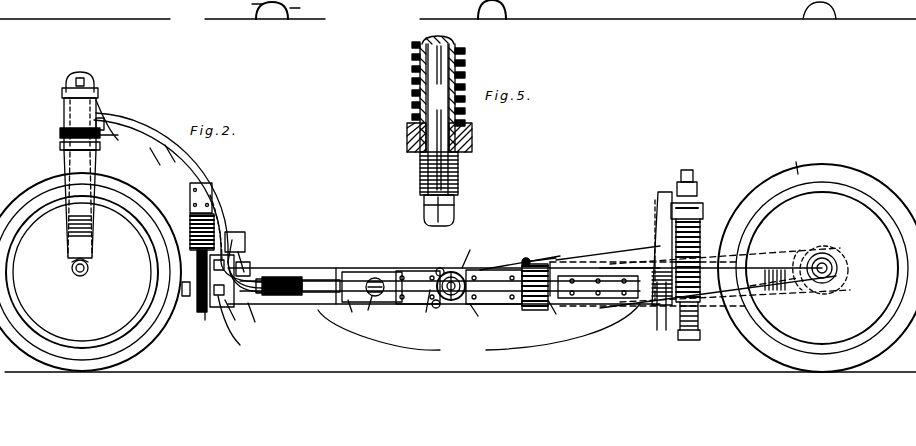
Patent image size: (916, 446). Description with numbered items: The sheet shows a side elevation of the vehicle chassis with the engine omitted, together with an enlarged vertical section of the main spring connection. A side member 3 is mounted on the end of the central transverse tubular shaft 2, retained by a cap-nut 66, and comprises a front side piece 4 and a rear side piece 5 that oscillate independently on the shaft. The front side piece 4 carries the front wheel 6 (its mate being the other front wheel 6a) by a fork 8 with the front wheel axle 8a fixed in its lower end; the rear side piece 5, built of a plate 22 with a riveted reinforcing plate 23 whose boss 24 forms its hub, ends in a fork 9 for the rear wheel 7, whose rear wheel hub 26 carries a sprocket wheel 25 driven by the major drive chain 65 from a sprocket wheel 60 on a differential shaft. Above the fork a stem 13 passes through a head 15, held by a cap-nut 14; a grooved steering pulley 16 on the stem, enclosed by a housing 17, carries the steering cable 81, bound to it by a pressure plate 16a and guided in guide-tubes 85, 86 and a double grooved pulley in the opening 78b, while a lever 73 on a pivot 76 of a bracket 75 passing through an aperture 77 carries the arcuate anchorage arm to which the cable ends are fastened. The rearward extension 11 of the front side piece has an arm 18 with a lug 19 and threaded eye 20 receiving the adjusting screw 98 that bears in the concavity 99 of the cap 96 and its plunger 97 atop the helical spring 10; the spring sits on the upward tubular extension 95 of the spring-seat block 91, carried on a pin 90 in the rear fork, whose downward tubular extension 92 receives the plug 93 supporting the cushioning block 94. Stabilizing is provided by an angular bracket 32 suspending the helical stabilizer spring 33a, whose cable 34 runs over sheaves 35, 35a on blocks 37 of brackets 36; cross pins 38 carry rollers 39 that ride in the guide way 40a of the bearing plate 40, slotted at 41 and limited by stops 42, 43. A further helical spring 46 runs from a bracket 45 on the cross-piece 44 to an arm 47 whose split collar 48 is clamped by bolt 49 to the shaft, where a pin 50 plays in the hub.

In FIG. 2, the tubular shaft 2 is at (440, 276).
In FIG. 2, the side member 3 is at (479, 330).
In FIG. 2, the front side piece 4 is at (318, 276).
In FIG. 2, the rear side piece 5 is at (662, 308).
In FIG. 2, the front wheel 6 is at (30, 188).
In FIG. 2, the front wheel 6a is at (301, 7).
In FIG. 2, the rear wheel 7 is at (800, 172).
In FIG. 2, the fork 8 is at (70, 230).
In FIG. 2, the front wheel axle 8a is at (72, 271).
In FIG. 2, the fork 9 is at (730, 300).
In FIG. 2, the helical spring 10 is at (700, 236).
In FIG. 5, the helical spring 10 is at (413, 77).
In FIG. 2, the rearward extension 11 is at (634, 262).
In FIG. 2, the stem 13 is at (64, 108).
In FIG. 2, the cap-nut 14 is at (66, 83).
In FIG. 2, the head 15 is at (100, 106).
In FIG. 2, the grooved steering pulley 16 is at (118, 135).
In FIG. 2, the pressure plate 16a is at (62, 147).
In FIG. 2, the housing 17 is at (60, 133).
In FIG. 2, the upwardly extending arm 18 is at (656, 218).
In FIG. 2, the lug 19 is at (660, 194).
In FIG. 2, the threaded eye 20 is at (698, 194).
In FIG. 2, the plate 22 is at (606, 300).
In FIG. 2, the reinforcing plate 23 is at (496, 268).
In FIG. 2, the boss 24 is at (472, 270).
In FIG. 2, the sprocket wheel 25 is at (800, 268).
In FIG. 2, the rear axle 26 is at (836, 272).
In FIG. 2, the angular bracket 32 is at (203, 188).
In FIG. 2, the helical stabilizer spring 33a is at (212, 208).
In FIG. 2, the connecting line or cable 34 is at (195, 258).
In FIG. 2, the sheave 35 is at (232, 266).
In FIG. 2, the sheave 35a is at (196, 302).
In FIG. 2, the bracket 36 is at (243, 262).
In FIG. 2, the block or support 37 is at (228, 308).
In FIG. 2, the cross pin 38 is at (208, 312).
In FIG. 2, the anti-friction guide roller 39 is at (255, 312).
In FIG. 2, the bearing plate 40 is at (246, 252).
In FIG. 2, the vertical guide way 40a is at (247, 5).
In FIG. 2, the vertical slot 41 is at (233, 244).
In FIG. 2, the positive stop 42 is at (235, 234).
In FIG. 2, the positive stop 43 is at (238, 344).
In FIG. 2, the strut or cross-piece 44 is at (550, 262).
In FIG. 2, the bracket 45 is at (550, 306).
In FIG. 2, the helical spring 46 is at (524, 306).
In FIG. 2, the arm 47 is at (528, 258).
In FIG. 2, the split collar 48 is at (441, 268).
In FIG. 2, the bolt 49 is at (452, 300).
In FIG. 2, the pin 50 is at (466, 264).
In FIG. 2, the sprocket wheel 60 is at (404, 304).
In FIG. 2, the major drive chain 65 is at (592, 262).
In FIG. 2, the cap-nut 66 is at (474, 304).
In FIG. 2, the lever 73 is at (348, 274).
In FIG. 2, the bracket 75 is at (372, 302).
In FIG. 2, the pivot 76 is at (375, 278).
In FIG. 2, the aperture 77 is at (350, 306).
In FIG. 2, the opening 78b is at (336, 268).
In FIG. 2, the steering cable 81 is at (280, 278).
In FIG. 2, the guide-tube 85 is at (165, 160).
In FIG. 2, the guide-tube 86 is at (256, 292).
In FIG. 2, the pin 90 is at (696, 318).
In FIG. 5, the spring-seat block 91 is at (407, 139).
In FIG. 5, the downward tubular extension 92 is at (420, 174).
In FIG. 5, the plug 93 is at (424, 202).
In FIG. 5, the cushioning block 94 is at (472, 139).
In FIG. 5, the upward tubular extension 95 is at (414, 100).
In FIG. 2, the cap 96 is at (700, 218).
In FIG. 5, the plunger 97 is at (456, 42).
In FIG. 2, the adjusting screw 98 is at (687, 170).
In FIG. 2, the concavity 99 is at (703, 208).